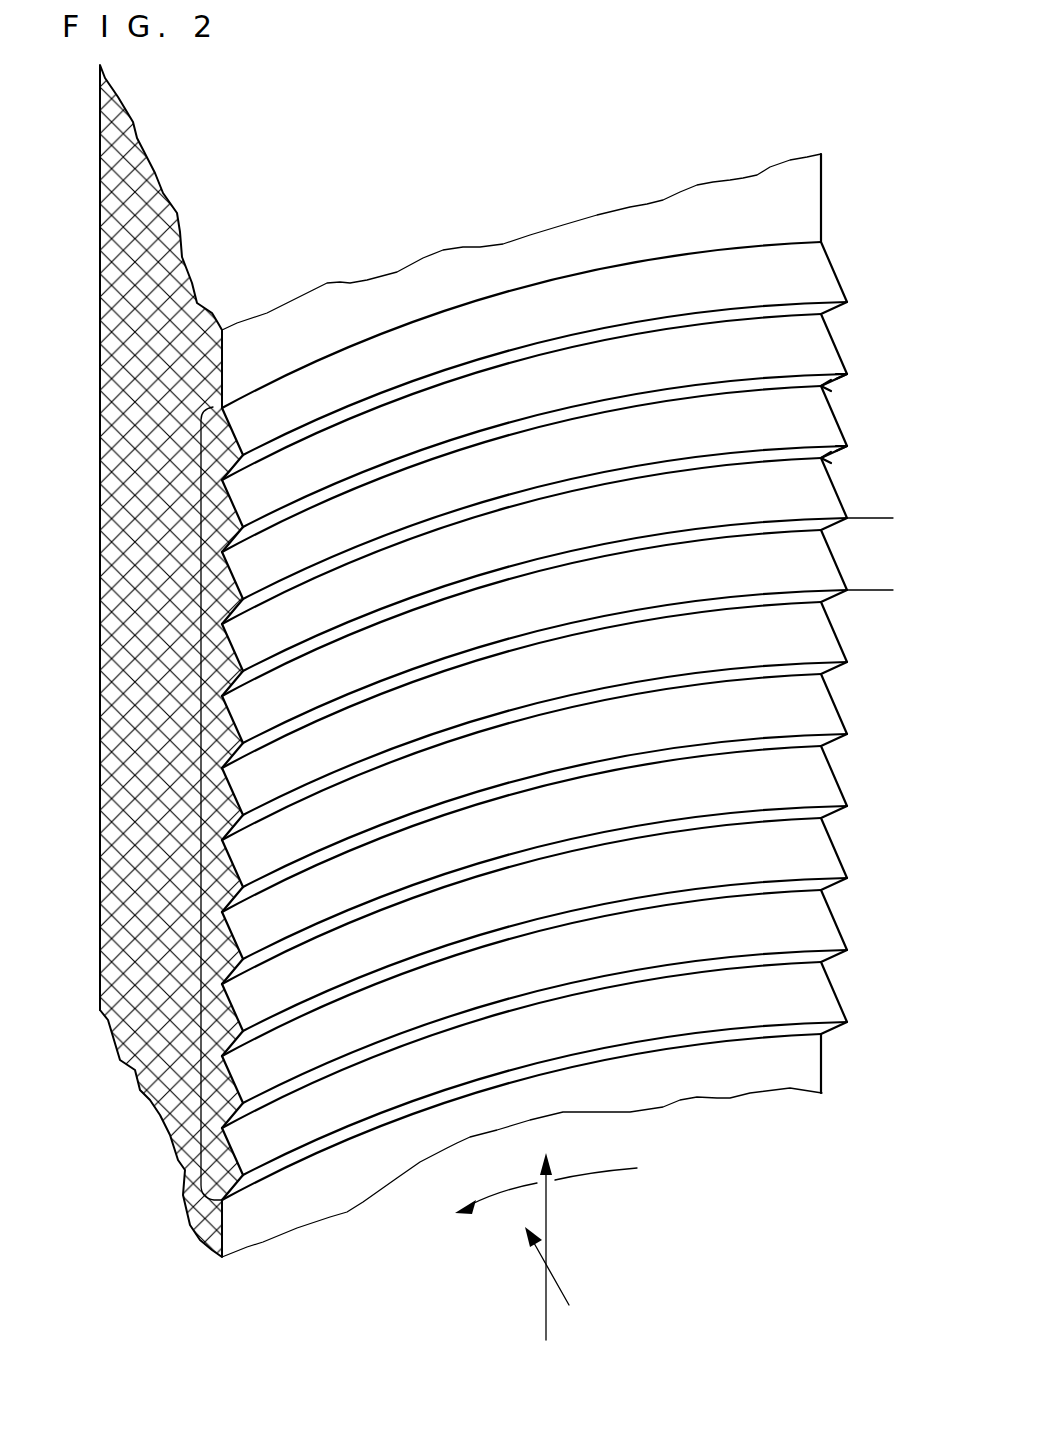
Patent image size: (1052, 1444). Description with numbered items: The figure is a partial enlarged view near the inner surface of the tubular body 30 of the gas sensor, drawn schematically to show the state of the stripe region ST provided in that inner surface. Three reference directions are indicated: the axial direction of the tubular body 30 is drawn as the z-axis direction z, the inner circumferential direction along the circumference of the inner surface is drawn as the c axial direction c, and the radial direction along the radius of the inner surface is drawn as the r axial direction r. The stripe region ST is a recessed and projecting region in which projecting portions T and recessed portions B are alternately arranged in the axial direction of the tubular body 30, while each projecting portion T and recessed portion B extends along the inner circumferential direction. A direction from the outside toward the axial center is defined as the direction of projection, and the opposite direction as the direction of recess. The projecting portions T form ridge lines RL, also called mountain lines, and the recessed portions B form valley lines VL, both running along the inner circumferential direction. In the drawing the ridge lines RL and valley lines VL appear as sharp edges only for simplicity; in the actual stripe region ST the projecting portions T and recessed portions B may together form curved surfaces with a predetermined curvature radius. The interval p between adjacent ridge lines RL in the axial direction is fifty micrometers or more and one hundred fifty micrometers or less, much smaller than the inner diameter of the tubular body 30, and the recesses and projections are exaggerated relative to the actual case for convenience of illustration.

The tubular body 30 is at (94, 756).
The stripe region ST is at (201, 795).
The ridge line RL is at (801, 300).
The valley line VL is at (799, 327).
The projecting portion T is at (861, 377).
The recessed portion B is at (835, 391).
The interval p is at (885, 518).
The z-axis direction z is at (551, 1235).
The c axial direction c is at (537, 1200).
The r axial direction r is at (539, 1255).